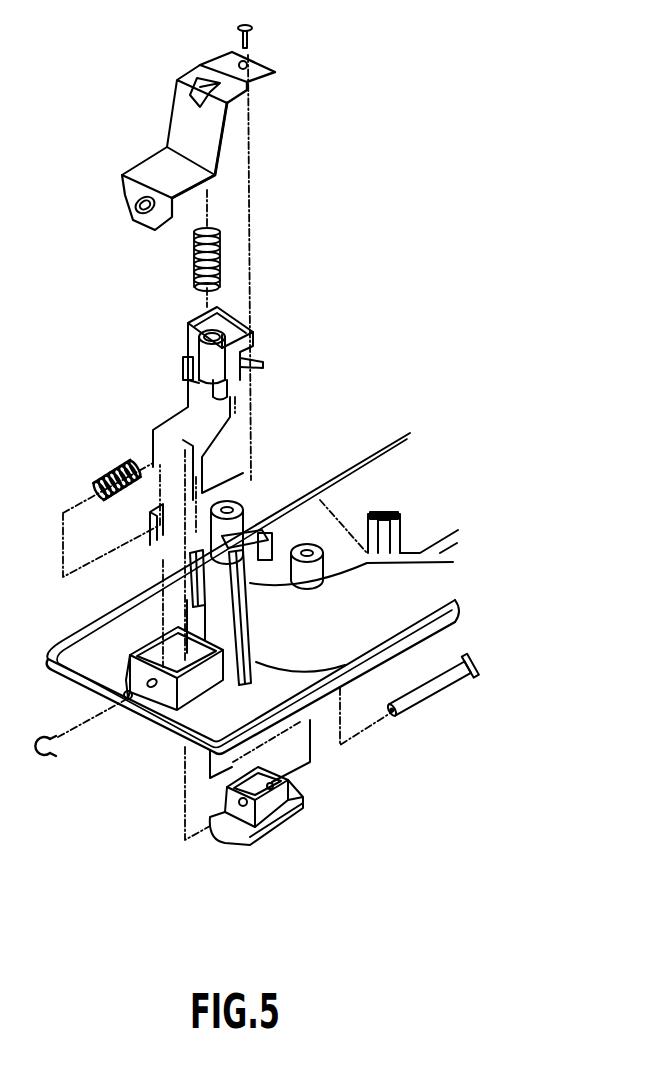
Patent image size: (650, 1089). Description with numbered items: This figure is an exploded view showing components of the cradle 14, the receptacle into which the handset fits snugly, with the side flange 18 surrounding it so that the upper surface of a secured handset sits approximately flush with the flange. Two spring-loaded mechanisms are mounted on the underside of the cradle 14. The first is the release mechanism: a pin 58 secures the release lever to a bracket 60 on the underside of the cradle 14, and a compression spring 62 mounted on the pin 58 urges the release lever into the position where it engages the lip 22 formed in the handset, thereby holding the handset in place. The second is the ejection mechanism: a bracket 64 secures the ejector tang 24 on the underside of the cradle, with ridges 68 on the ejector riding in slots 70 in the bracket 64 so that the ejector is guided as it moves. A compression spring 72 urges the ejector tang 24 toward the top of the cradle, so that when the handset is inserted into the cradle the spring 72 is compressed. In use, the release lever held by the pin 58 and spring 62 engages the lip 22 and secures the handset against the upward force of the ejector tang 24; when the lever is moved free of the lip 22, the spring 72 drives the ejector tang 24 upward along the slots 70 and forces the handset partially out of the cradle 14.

The cradle 14 is at (455, 608).
The side flange 18 is at (120, 630).
The lip 22 is at (280, 818).
The ejector tang 24 is at (258, 338).
The pin 58 is at (428, 697).
The bracket 60 is at (203, 687).
The compression spring 62 is at (117, 463).
The bracket 64 is at (253, 610).
The ridges 68 is at (187, 333).
The slots 70 is at (265, 536).
The compression spring 72 is at (222, 253).